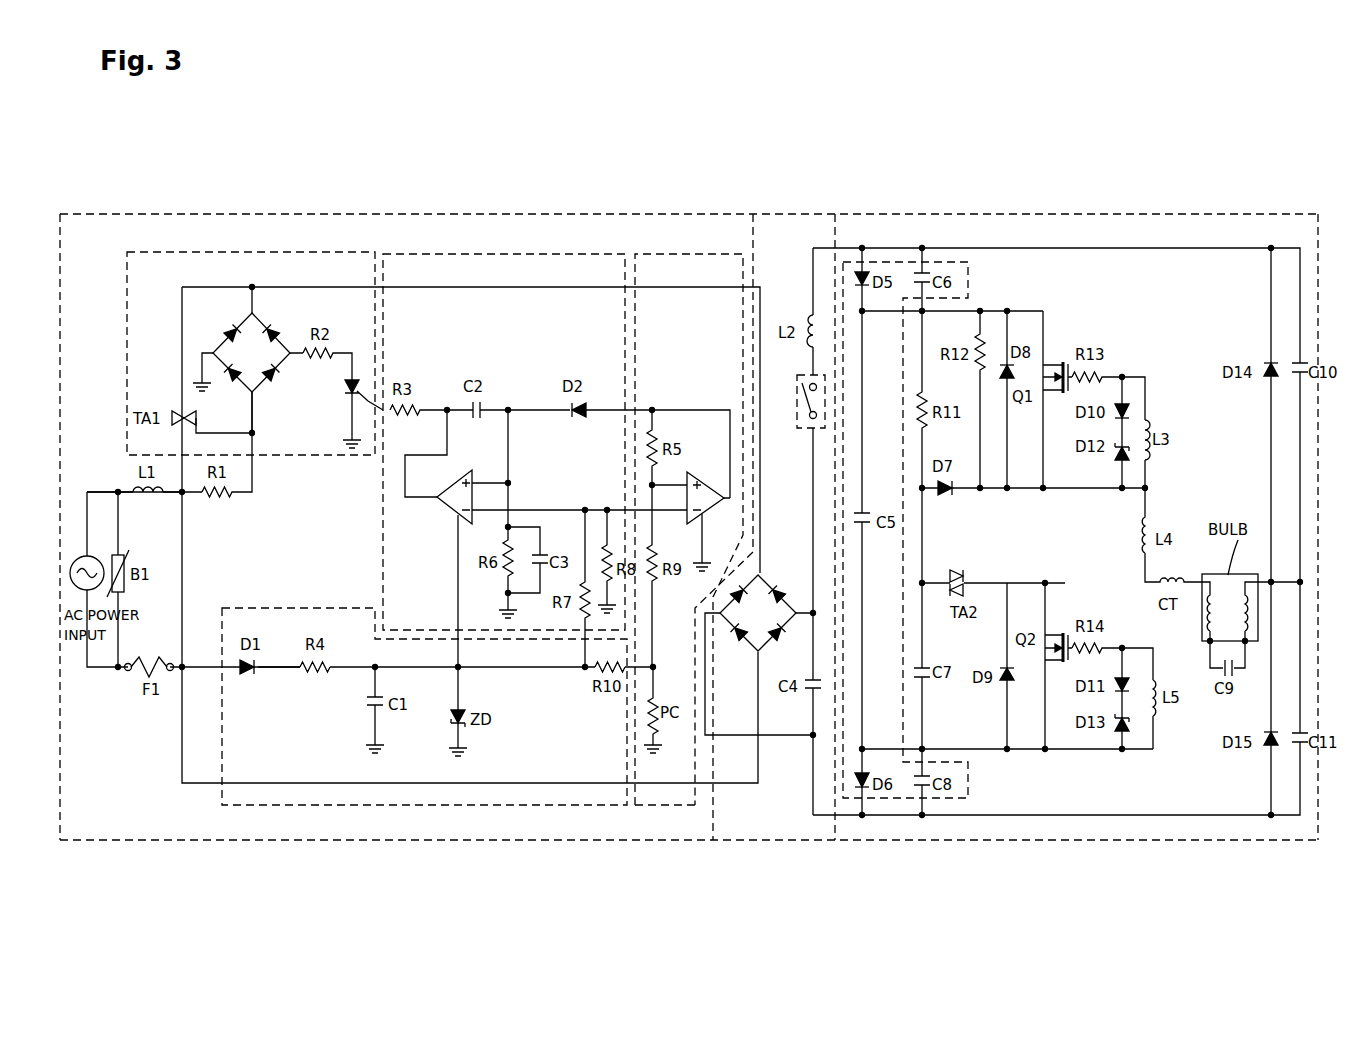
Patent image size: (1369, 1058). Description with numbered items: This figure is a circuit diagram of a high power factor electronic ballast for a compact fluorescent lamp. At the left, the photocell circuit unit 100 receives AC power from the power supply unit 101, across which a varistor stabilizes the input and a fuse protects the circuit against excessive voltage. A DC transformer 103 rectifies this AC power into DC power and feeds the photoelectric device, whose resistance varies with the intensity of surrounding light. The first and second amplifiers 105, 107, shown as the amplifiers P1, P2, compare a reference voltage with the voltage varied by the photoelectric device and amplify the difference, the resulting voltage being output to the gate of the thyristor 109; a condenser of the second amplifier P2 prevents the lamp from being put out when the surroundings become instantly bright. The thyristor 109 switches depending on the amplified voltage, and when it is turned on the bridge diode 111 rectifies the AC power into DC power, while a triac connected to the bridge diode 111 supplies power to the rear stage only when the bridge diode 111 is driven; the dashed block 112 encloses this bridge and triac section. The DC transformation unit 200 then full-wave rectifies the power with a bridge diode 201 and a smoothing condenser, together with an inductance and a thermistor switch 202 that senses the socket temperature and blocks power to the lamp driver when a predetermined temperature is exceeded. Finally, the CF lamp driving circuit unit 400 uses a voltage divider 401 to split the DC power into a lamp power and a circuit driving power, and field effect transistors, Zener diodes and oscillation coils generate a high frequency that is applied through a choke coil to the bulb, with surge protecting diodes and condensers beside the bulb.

The photocell circuit unit 100 is at (265, 214).
The power supply unit 101 is at (100, 558).
The DC transformer 103 is at (410, 805).
The first amplifier 105 is at (682, 262).
The second amplifier 107 is at (487, 256).
The thyristor (SCR) 109 is at (345, 390).
The bridge diode (BD) 111 is at (278, 330).
The phase control unit 112 is at (158, 255).
The DC transformation unit 200 is at (795, 214).
The bridge diode 201 is at (783, 595).
The thermistor switch 202 is at (801, 432).
The CF lamp driving circuit unit 400 is at (1130, 214).
The voltage divider 401 is at (877, 262).
The first amplifier P1 is at (712, 482).
The second amplifier P2 is at (452, 520).